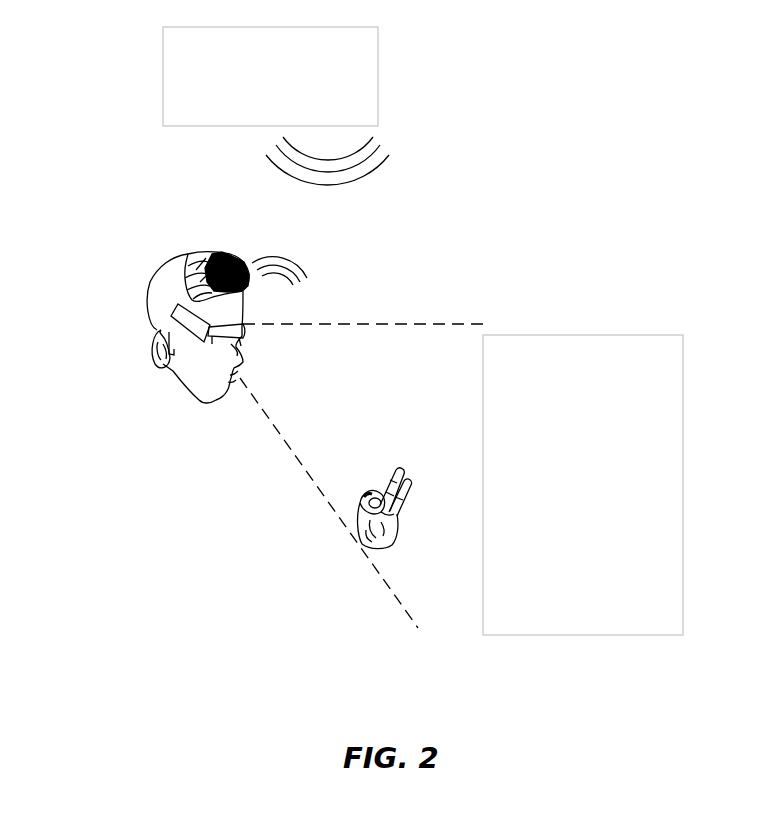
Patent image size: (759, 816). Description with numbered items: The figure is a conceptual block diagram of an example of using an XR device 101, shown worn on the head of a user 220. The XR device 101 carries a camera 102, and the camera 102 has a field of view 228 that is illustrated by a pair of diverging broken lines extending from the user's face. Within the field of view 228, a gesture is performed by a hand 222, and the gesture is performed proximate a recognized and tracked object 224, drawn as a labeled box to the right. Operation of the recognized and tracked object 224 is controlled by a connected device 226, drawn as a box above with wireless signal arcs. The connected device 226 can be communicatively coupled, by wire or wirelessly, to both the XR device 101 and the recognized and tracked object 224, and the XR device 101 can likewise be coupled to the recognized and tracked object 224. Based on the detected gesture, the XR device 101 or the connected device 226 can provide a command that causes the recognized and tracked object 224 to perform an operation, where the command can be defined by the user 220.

The XR device 101 is at (236, 327).
The camera 102 is at (171, 316).
The user 220 is at (171, 282).
The hand 222 is at (400, 503).
The recognized and tracked object 224 is at (683, 357).
The connected device 226 is at (378, 72).
The field of view 228 is at (383, 324).